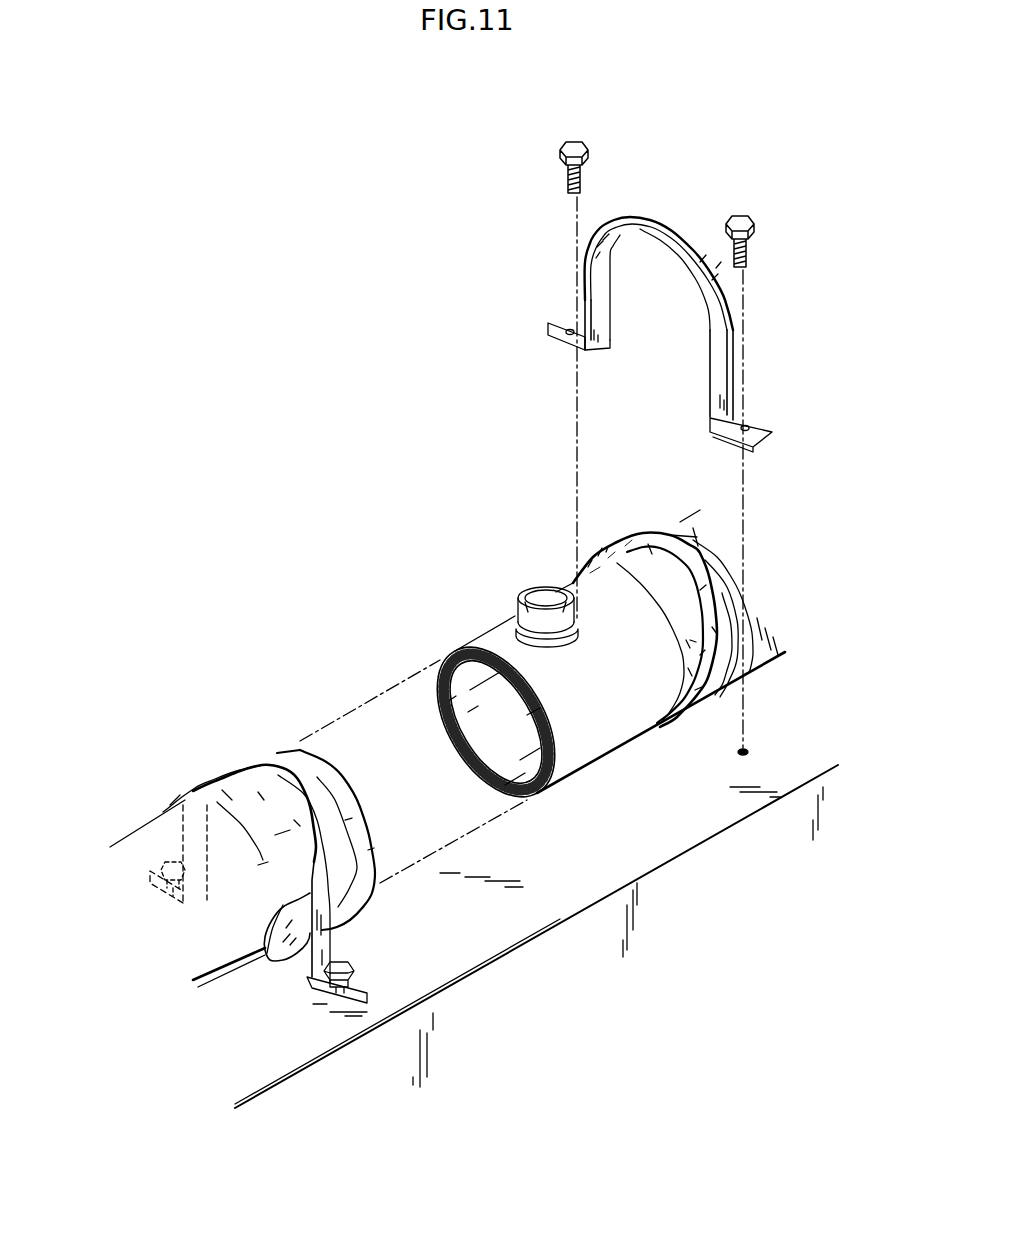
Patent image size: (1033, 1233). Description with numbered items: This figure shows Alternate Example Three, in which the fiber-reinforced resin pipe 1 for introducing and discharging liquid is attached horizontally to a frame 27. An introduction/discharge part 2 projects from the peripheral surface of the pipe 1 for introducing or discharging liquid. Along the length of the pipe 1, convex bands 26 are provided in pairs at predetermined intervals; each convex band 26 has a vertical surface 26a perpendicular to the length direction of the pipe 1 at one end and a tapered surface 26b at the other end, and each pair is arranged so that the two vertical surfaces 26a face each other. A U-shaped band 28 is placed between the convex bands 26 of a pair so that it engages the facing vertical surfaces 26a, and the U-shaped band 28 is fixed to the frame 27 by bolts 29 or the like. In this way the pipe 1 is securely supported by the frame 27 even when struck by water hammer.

The pipe 1 is at (488, 631).
The introduction/discharge part 2 is at (525, 583).
The convex band 26 is at (667, 530).
The vertical surface 26a is at (633, 550).
The tapered surface 26b is at (695, 550).
The frame 27 is at (528, 917).
The U-shaped band 28 is at (703, 300).
The bolt 29 is at (728, 244).